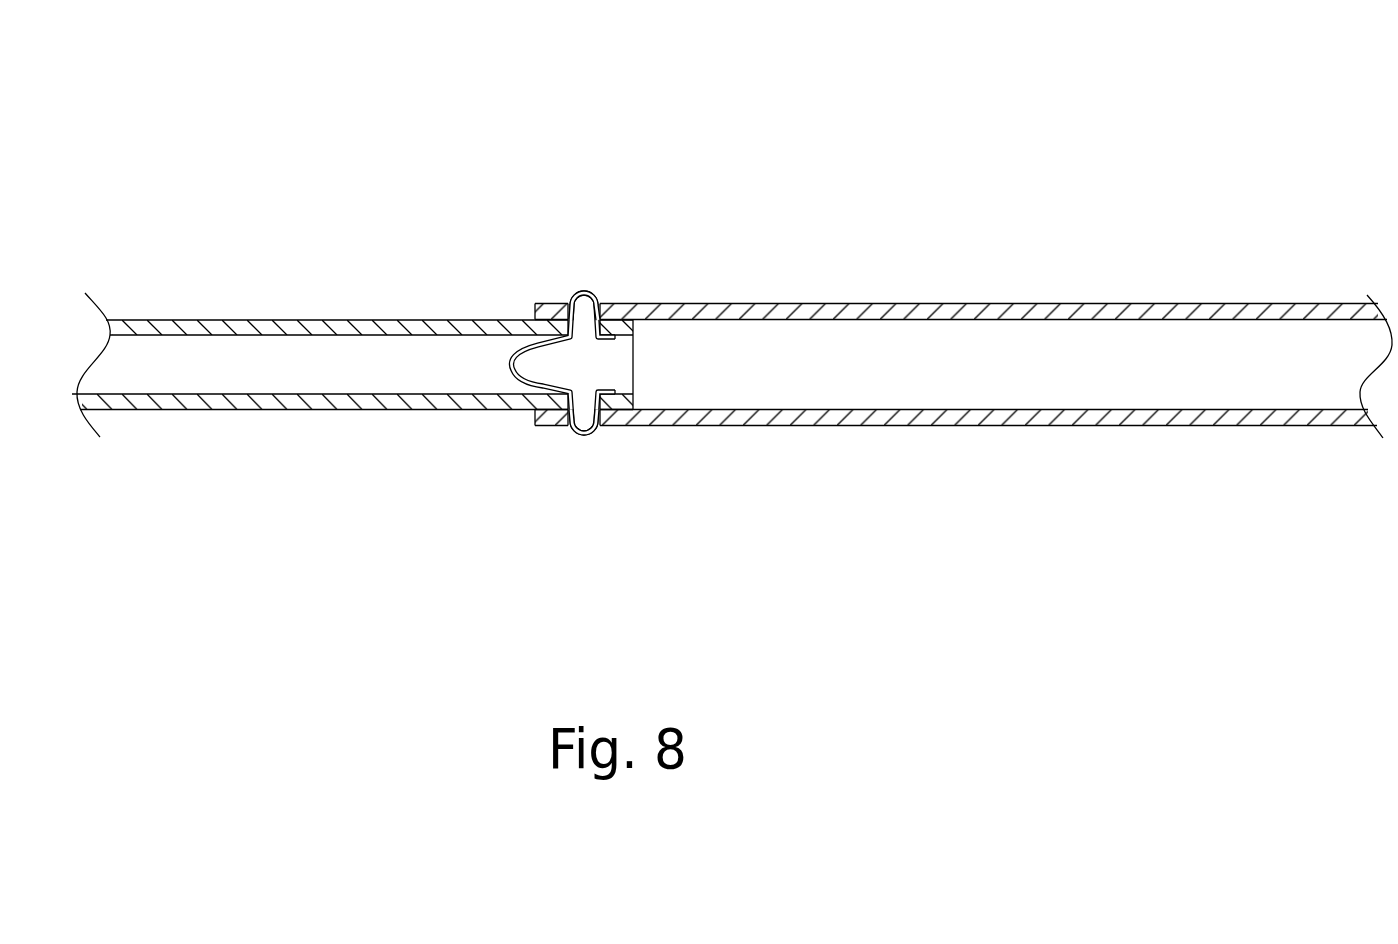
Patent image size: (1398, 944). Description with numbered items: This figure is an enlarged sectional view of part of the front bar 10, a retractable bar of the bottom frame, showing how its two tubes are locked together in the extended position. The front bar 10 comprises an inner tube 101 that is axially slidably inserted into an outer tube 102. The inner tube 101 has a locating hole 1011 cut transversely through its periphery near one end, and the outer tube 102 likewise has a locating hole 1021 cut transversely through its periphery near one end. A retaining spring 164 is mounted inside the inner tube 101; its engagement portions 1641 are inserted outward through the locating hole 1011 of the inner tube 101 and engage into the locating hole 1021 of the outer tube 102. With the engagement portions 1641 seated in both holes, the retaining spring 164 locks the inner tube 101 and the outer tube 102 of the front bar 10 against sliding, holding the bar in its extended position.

The front bar 10 is at (657, 83).
The inner tube 101 is at (372, 319).
The outer tube 102 is at (687, 303).
The locating hole 1011 is at (567, 325).
The locating hole 1021 is at (609, 310).
The retaining spring 164 is at (533, 346).
The engagement portions 1641 is at (585, 293).